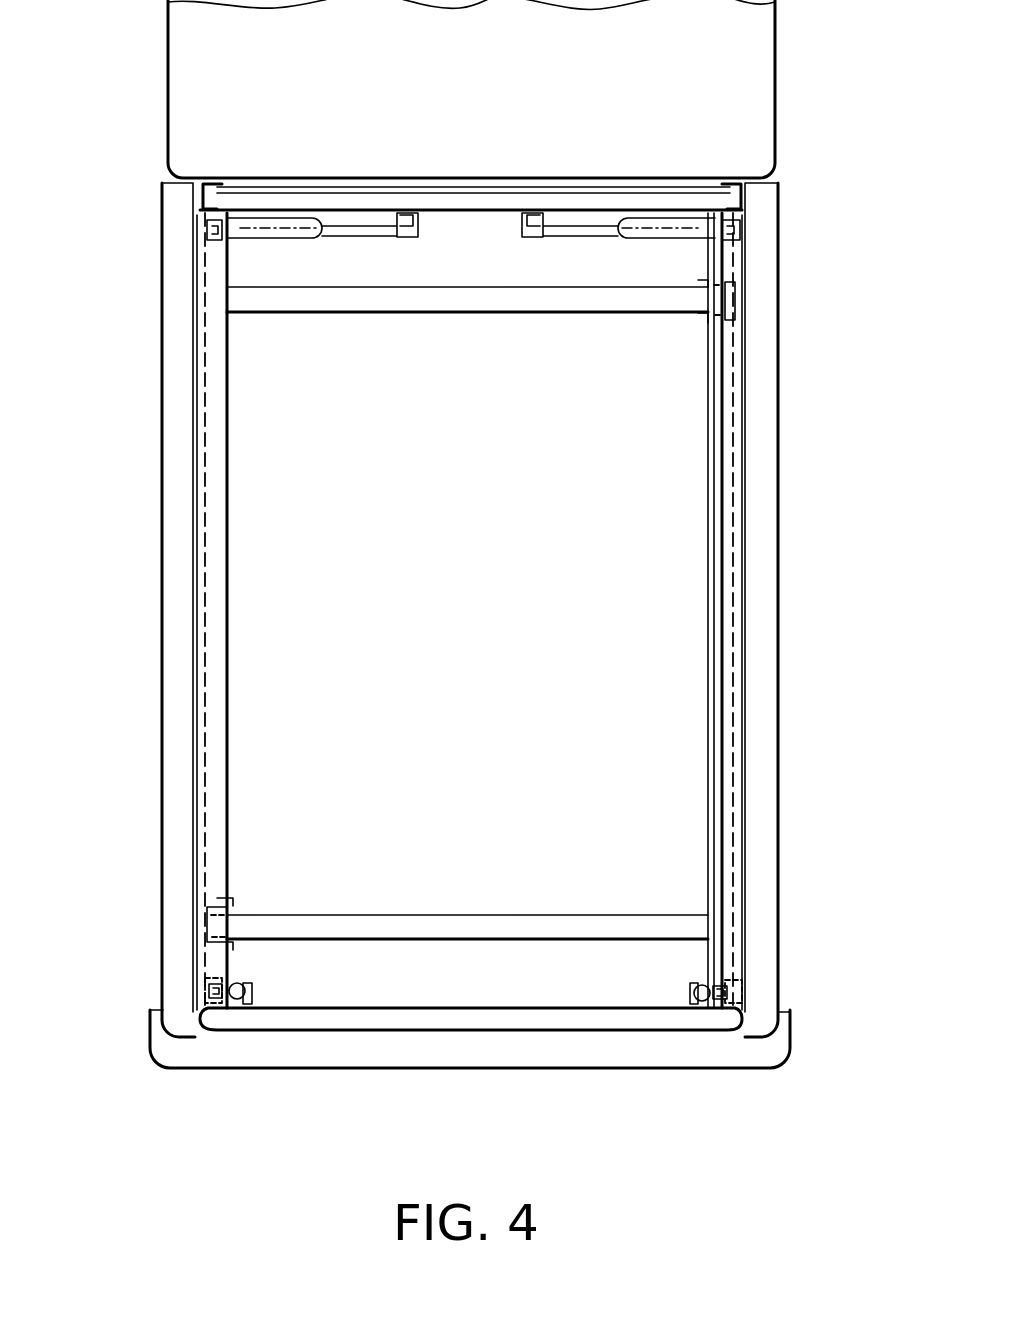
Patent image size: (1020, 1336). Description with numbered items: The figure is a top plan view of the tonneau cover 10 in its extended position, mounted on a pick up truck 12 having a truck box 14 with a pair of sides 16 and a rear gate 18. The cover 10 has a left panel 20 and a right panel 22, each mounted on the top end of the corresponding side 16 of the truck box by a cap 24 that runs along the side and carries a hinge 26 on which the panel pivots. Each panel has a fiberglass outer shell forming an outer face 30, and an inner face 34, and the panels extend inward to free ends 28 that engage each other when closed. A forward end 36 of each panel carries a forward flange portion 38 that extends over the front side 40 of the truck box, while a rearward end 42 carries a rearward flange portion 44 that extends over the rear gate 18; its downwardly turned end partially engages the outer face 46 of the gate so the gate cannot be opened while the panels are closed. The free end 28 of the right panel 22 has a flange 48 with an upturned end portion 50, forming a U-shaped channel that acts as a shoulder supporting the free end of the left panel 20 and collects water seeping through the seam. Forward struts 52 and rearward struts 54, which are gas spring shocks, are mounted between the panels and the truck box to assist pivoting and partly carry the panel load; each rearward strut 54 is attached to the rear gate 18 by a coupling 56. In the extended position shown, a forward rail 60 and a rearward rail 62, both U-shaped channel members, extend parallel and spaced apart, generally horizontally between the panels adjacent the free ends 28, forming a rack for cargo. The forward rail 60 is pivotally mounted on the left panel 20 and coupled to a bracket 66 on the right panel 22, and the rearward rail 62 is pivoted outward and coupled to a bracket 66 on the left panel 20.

The tonneau cover 10 is at (845, 145).
The pick up truck 12 is at (162, 121).
The truck box 14 is at (265, 788).
The sides 16 is at (473, 610).
The rear gate 18 is at (470, 1069).
The left panel 20 is at (399, 610).
The right panel 22 is at (752, 610).
The cap 24 is at (762, 440).
The hinge 26 is at (190, 552).
The free ends 28 is at (215, 562).
The outer face 30 is at (188, 488).
The inner face 34 is at (207, 690).
The forward end 36 is at (196, 224).
The forward flange portion 38 is at (210, 180).
The front side 40 is at (442, 190).
The rearward end 42 is at (186, 972).
The rearward flange portion 44 is at (213, 1040).
The outer face of the rear gate 46 is at (520, 1030).
The flange 48 is at (714, 548).
The upturned end portion 50 is at (733, 594).
The forward struts 52 is at (309, 250).
The rearward struts 54 is at (240, 982).
The coupling 56 is at (252, 1000).
The forward rail 60 is at (490, 306).
The rearward rail 62 is at (487, 920).
The bracket 66 is at (700, 318).